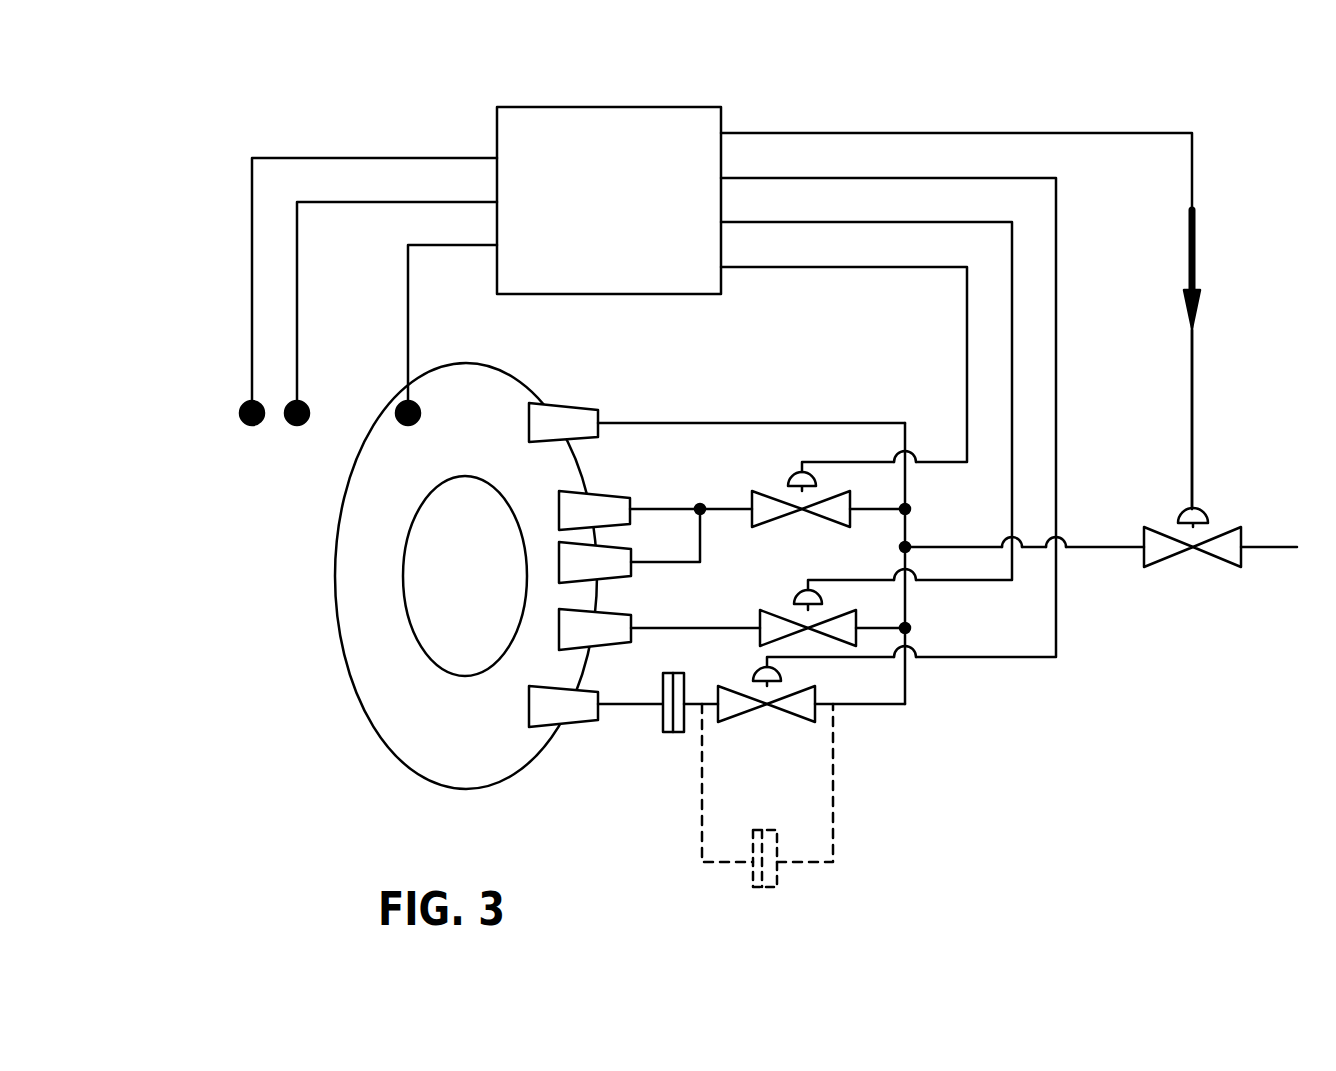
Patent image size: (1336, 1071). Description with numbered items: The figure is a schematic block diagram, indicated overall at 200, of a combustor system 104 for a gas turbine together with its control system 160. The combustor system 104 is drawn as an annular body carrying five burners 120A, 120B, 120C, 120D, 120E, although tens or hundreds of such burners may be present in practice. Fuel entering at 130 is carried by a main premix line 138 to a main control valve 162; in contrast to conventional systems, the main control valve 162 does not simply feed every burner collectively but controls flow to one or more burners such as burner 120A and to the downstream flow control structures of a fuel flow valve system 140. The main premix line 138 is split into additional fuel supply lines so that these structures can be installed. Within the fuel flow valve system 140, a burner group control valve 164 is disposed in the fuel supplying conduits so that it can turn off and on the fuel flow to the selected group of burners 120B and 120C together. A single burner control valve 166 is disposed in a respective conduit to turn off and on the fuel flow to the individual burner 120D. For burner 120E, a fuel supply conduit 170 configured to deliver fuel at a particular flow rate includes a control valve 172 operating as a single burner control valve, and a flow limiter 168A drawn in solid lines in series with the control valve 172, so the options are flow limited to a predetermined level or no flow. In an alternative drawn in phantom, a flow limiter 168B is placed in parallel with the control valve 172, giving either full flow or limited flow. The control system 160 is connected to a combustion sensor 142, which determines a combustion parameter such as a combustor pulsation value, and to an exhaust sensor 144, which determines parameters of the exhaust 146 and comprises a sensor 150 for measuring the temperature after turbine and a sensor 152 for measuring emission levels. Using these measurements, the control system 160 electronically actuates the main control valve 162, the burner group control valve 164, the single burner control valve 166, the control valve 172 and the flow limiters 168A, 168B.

The combustor system 104 is at (312, 692).
The fuel system 200 is at (460, 90).
The control system 160 is at (631, 217).
The fuel supply 130 is at (1193, 265).
The main premix line 138 is at (1193, 398).
The main control valve 162 is at (1203, 516).
The exhaust sensor 144 is at (263, 421).
The sensor for measuring TAT 150 is at (243, 404).
The emission sensor 152 is at (297, 426).
The combustion sensor 142 is at (397, 407).
The exhaust 146 is at (276, 519).
The burner 120A is at (555, 418).
The burner 120B is at (596, 508).
The burner 120C is at (609, 564).
The burner 120D is at (609, 634).
The burner 120E is at (579, 711).
The burner group control valve 164 is at (768, 512).
The single burner control valve 166 is at (847, 622).
The control valve 172 is at (797, 712).
The flow limiter 168A is at (683, 722).
The flow limiter 168B is at (780, 873).
The fuel supply conduit 170 is at (860, 704).
The fuel flow valve system 140 is at (866, 760).